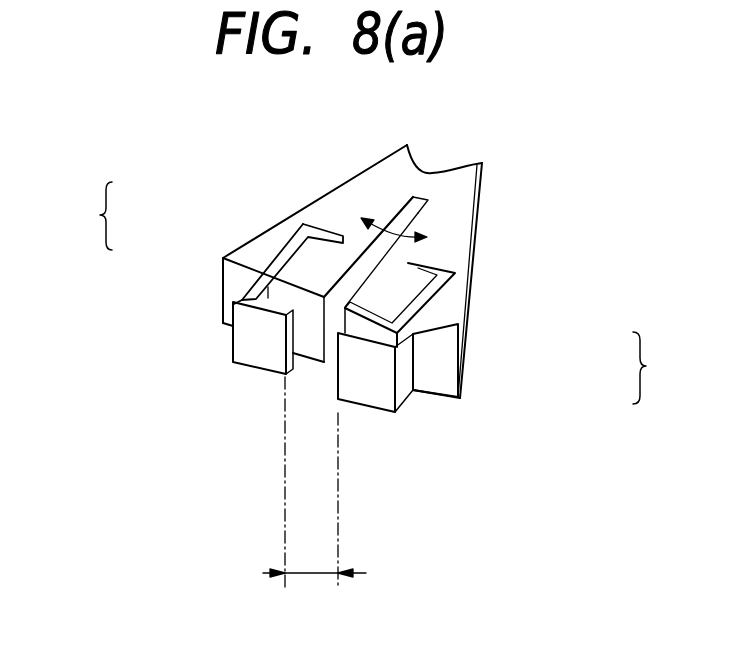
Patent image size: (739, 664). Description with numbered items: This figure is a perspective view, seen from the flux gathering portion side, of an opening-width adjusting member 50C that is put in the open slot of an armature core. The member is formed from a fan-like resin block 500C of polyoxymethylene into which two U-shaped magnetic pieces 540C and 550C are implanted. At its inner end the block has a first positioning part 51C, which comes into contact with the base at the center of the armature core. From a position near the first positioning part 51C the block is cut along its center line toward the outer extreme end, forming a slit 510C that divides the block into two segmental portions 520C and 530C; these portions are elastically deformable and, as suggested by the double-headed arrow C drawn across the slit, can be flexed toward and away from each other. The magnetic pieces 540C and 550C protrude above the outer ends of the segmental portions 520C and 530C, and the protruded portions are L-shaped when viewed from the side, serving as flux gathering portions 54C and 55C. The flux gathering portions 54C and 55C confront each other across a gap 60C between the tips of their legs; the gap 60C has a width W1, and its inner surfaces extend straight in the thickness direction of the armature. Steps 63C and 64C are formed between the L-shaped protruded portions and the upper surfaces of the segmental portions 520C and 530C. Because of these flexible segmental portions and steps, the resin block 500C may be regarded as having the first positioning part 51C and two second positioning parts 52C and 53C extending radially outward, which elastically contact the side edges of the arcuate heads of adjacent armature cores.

The opening-width adjusting member 50C is at (518, 123).
The first positioning part 51C is at (437, 163).
The resin block 500C is at (478, 233).
The slit 510C is at (407, 215).
The U-shaped magnetic piece 550C is at (288, 238).
The segmental portion 530C is at (258, 248).
The second positioning part 53C is at (83, 216).
The step 64C is at (247, 273).
The flux gathering portion 55C is at (262, 355).
The U-shaped magnetic piece 540C is at (452, 286).
The segmental portion 520C is at (447, 320).
The second positioning part 52C is at (663, 368).
The step 63C is at (413, 358).
The flux gathering portion 54C is at (367, 377).
The gap 60C is at (313, 380).
The width of the gap W1 is at (314, 497).
The direction C is at (404, 234).